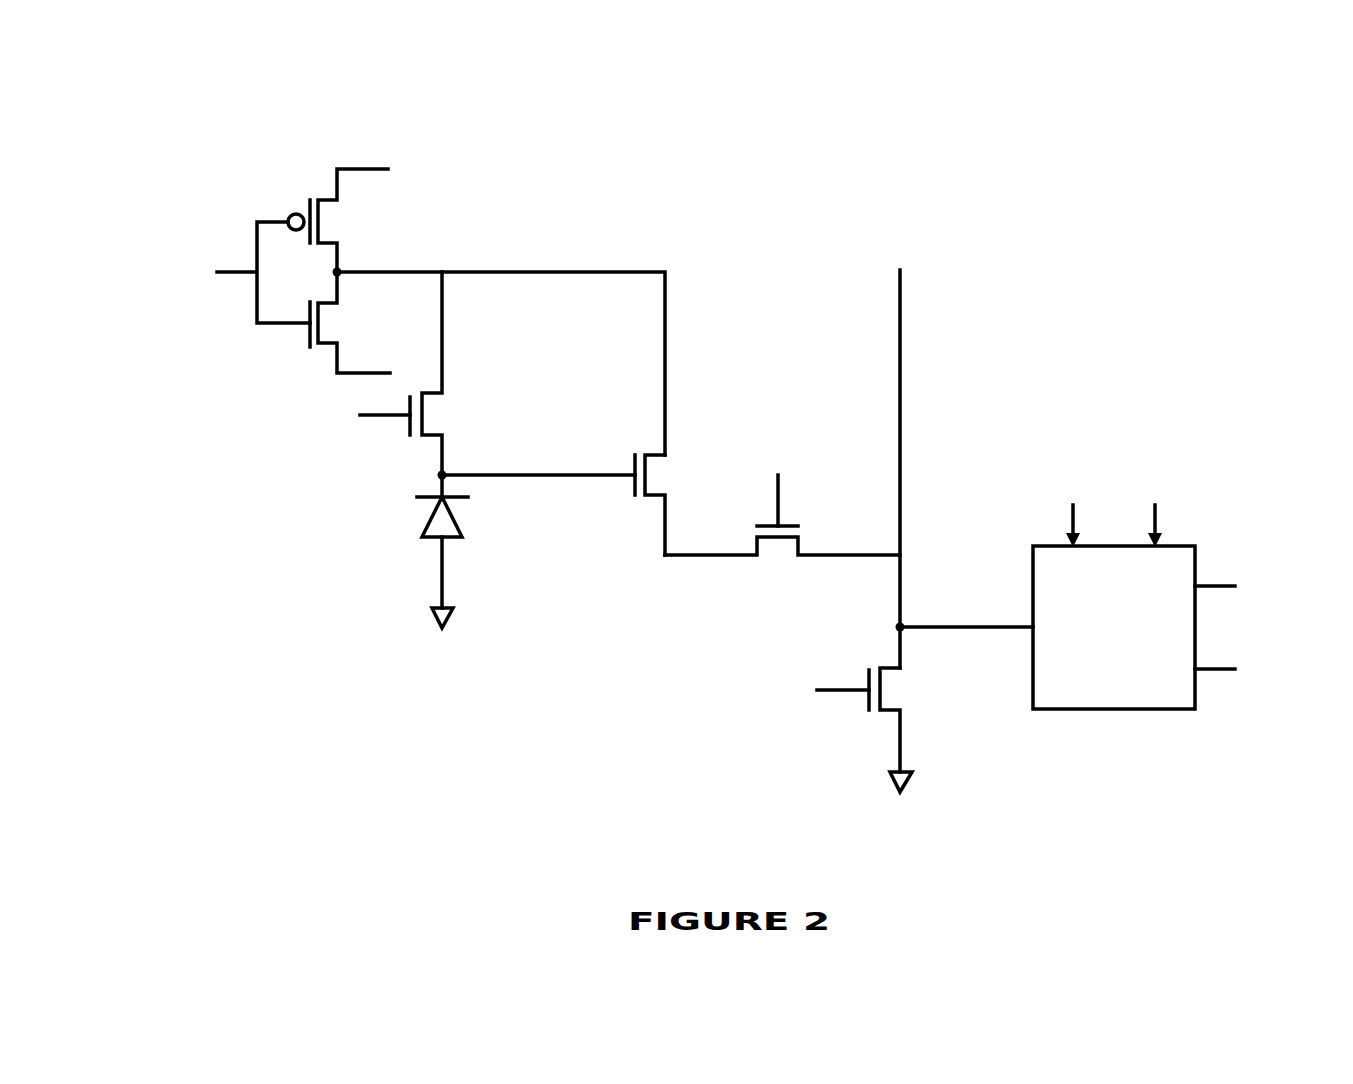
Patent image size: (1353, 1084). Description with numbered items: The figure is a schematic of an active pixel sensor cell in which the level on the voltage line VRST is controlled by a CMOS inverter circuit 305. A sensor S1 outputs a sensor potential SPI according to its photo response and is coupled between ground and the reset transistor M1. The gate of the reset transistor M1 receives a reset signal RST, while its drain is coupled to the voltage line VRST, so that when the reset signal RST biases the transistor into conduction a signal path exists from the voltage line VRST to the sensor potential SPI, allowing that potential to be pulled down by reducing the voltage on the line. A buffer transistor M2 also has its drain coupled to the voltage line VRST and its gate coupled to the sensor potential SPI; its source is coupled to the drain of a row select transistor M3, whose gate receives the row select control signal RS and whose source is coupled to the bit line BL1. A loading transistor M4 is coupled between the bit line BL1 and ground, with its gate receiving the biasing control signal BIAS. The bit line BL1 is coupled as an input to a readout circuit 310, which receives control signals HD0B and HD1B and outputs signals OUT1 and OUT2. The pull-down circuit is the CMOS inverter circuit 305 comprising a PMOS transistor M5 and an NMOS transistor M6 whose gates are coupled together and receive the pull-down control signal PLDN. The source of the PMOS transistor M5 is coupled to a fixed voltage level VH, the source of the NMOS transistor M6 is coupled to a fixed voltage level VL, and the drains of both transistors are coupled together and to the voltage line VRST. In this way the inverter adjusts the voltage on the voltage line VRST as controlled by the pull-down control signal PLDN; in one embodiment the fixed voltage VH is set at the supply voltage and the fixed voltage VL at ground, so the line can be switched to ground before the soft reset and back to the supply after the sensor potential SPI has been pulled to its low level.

The CMOS inverter circuit 305 is at (585, 445).
The readout circuit 310 is at (1178, 621).
The reset transistor M1 is at (430, 417).
The buffer transistor M2 is at (655, 475).
The row select transistor M3 is at (777, 548).
The loading transistor M4 is at (892, 690).
The PMOS transistor M5 is at (330, 222).
The NMOS transistor M6 is at (330, 323).
The sensor S1 is at (457, 508).
The bit line BL1 is at (901, 373).
The reset signal RST is at (358, 414).
The sensor potential SPI is at (432, 488).
The row select control signal RS is at (779, 485).
The biasing control signal BIAS is at (826, 690).
The pull-down control signal PLDN is at (218, 270).
The fixed voltage level VH is at (388, 168).
The fixed voltage level VL is at (390, 373).
The voltage line VRST is at (545, 271).
The control signal HD0B is at (1073, 513).
The control signal HD1B is at (1155, 513).
The output signal OUT1 is at (1259, 589).
The output signal OUT2 is at (1259, 672).